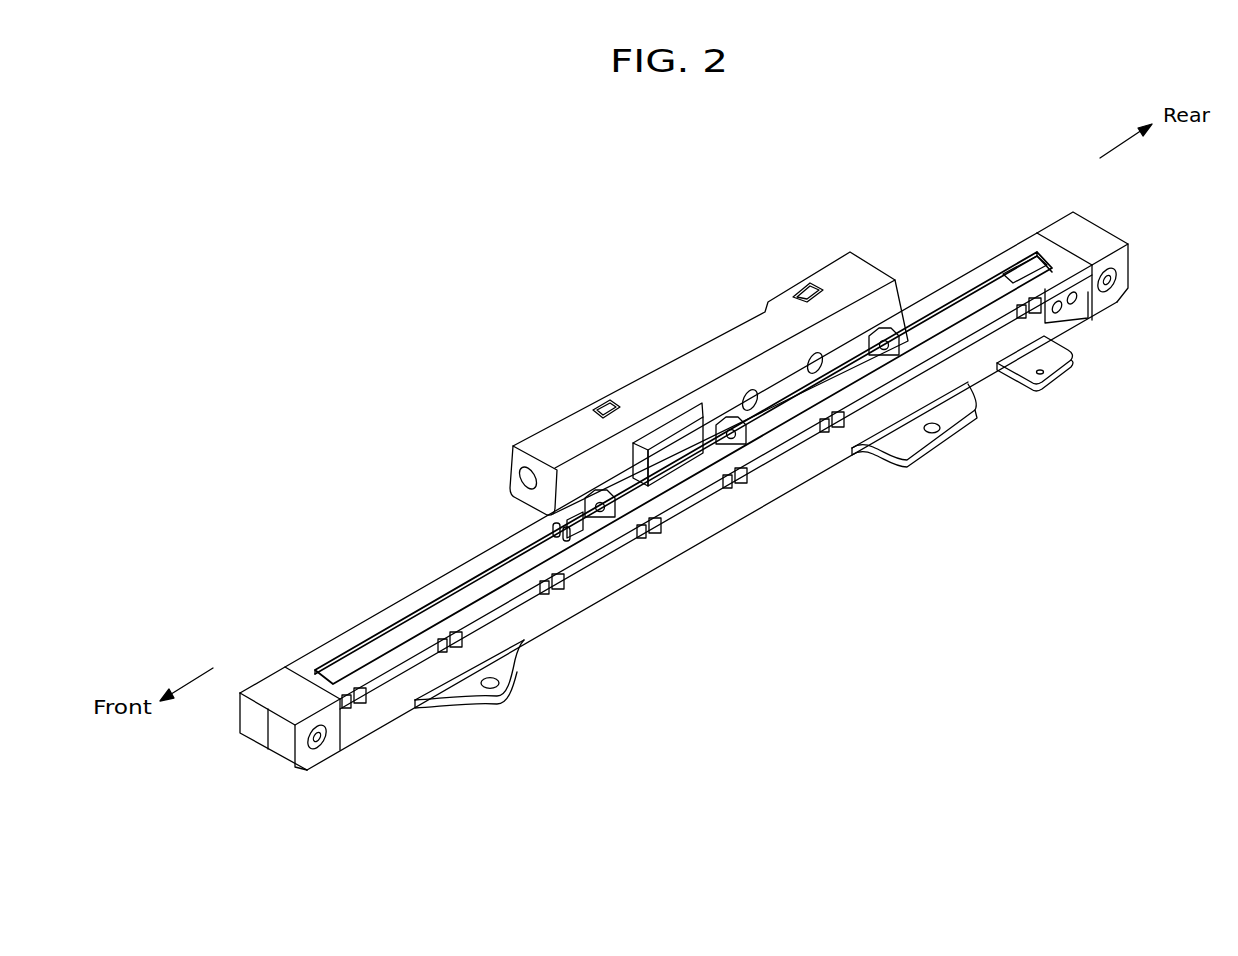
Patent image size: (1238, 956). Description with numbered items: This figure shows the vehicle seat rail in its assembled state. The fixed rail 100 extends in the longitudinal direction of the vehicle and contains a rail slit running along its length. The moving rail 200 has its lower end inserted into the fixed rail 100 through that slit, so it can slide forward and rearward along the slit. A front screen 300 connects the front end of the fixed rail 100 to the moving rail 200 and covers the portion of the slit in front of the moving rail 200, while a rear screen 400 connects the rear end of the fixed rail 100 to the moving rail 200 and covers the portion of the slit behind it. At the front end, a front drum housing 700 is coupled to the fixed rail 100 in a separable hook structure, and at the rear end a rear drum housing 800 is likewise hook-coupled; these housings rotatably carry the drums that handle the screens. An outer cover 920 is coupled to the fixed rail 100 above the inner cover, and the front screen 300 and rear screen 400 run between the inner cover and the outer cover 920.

The fixed rail 100 is at (690, 535).
The moving rail 200 is at (698, 372).
The front screen 300 is at (412, 623).
The rear screen 400 is at (1015, 278).
The front drum housing 700 is at (288, 742).
The rear drum housing 800 is at (1110, 240).
The outer cover 920 is at (942, 292).